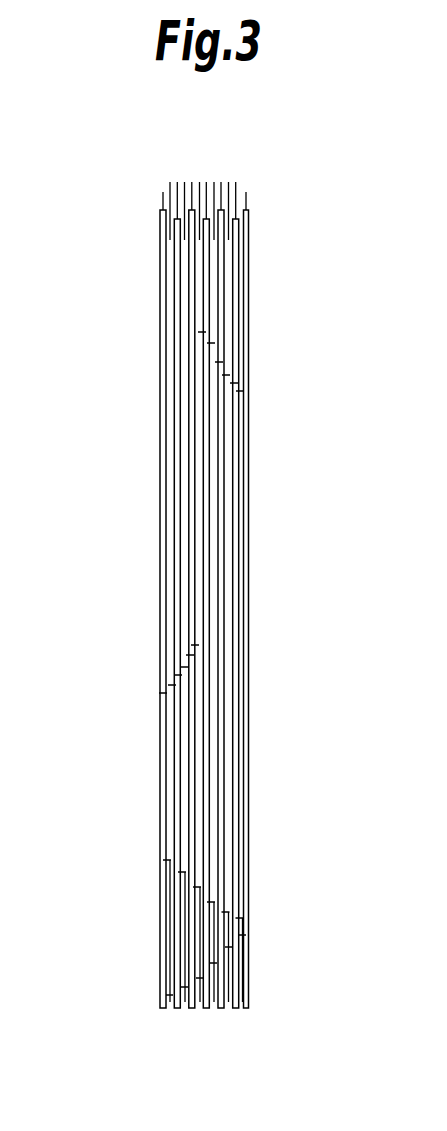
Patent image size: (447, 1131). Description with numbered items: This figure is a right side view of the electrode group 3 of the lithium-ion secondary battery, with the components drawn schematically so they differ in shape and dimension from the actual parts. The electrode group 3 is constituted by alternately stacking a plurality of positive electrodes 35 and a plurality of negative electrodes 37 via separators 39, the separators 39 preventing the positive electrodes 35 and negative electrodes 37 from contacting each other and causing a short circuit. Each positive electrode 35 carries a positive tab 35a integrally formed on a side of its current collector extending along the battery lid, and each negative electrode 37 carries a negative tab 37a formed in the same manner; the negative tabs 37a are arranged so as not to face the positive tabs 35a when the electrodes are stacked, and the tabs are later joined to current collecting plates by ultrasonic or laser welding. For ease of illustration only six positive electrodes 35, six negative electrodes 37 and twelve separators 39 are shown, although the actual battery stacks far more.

The electrode group 3 is at (248, 562).
The positive electrode 35 is at (172, 995).
The positive tab 35a is at (200, 199).
The negative electrode 37 is at (236, 918).
The negative tab 37a is at (173, 183).
The separator 39 is at (241, 391).